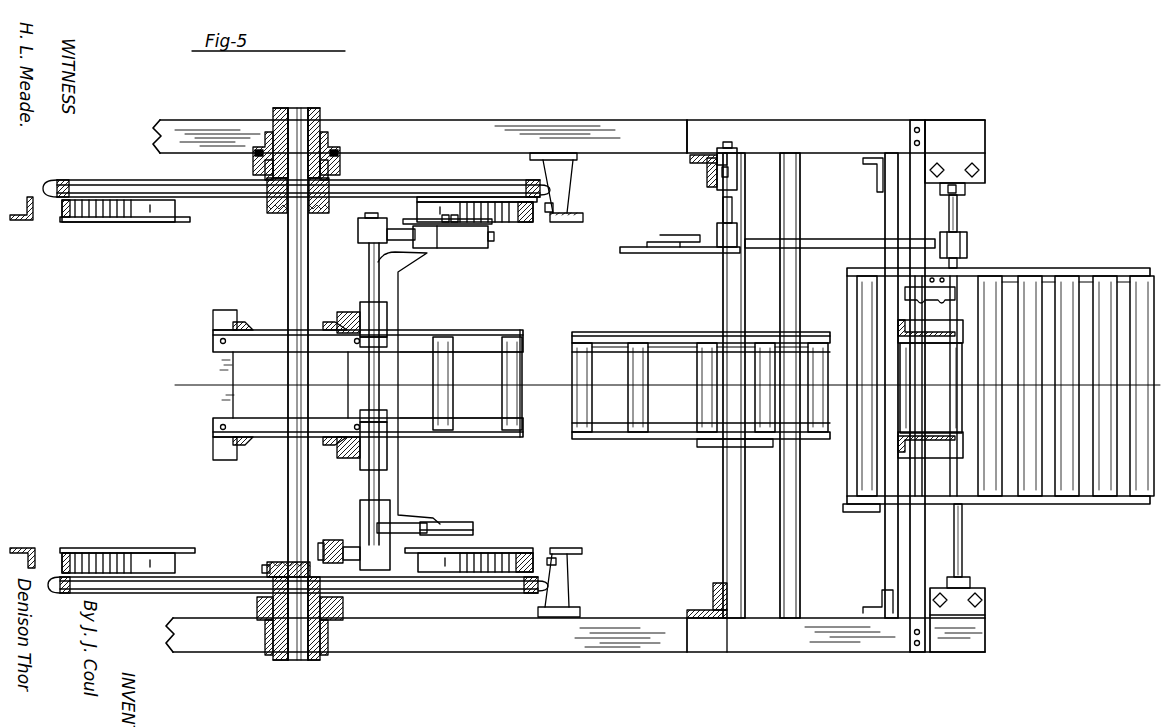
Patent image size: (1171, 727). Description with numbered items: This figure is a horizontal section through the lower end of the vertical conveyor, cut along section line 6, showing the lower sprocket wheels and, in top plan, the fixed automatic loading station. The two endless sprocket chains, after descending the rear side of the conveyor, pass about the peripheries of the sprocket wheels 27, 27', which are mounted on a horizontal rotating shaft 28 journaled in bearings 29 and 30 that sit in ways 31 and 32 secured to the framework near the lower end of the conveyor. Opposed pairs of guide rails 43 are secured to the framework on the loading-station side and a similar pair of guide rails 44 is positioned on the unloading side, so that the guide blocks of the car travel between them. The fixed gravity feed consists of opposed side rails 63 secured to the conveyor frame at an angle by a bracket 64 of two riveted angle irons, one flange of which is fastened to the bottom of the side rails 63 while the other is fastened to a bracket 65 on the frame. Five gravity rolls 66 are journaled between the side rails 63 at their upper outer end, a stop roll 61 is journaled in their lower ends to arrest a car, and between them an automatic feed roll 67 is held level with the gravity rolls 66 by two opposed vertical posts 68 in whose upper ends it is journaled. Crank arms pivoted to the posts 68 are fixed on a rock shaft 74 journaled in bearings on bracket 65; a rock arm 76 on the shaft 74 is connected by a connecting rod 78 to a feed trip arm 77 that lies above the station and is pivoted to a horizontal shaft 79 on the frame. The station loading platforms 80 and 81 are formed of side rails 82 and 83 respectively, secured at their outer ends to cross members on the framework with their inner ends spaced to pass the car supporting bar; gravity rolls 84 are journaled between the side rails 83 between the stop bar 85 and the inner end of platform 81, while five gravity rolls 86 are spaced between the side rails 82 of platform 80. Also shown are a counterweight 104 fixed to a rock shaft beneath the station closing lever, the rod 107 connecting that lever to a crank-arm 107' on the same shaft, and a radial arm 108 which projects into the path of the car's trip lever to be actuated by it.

The section line 6— 6 is at (662, 390).
The sprocket wheel 27 is at (296, 204).
The sprocket wheel 27' is at (298, 564).
The horizontal rotating shaft 28 is at (290, 272).
The bearing 29 is at (283, 119).
The bearing 30 is at (323, 636).
The way 31 is at (255, 159).
The way 32 is at (257, 603).
The guide rails 43 is at (530, 222).
The guide rails 44 is at (62, 215).
The stop roll 61 is at (860, 455).
The side rails 63 is at (1048, 268).
The bracket 64 is at (917, 515).
The bracket 65 is at (840, 619).
The gravity rolls 66 is at (1065, 500).
The automatic feed roll 67 is at (921, 399).
The vertical posts 68 is at (930, 337).
The rock shaft 74 is at (967, 216).
The rock arm 76 is at (969, 246).
The feed trip arm 77 is at (632, 250).
The connecting rod 78 is at (842, 240).
The horizontal shaft 79 is at (720, 216).
The station loading platform 80 is at (703, 414).
The station loading platform 81 is at (500, 434).
The side rails 82 is at (611, 458).
The side rails 83 is at (471, 333).
The gravity rolls 84 is at (503, 397).
The stop bar 85 is at (400, 290).
The gravity rolls 86 is at (700, 370).
The counterweight 104 is at (472, 242).
The rod 107 is at (338, 541).
The crank-arm 107' is at (380, 535).
The radial arm 108 is at (466, 524).